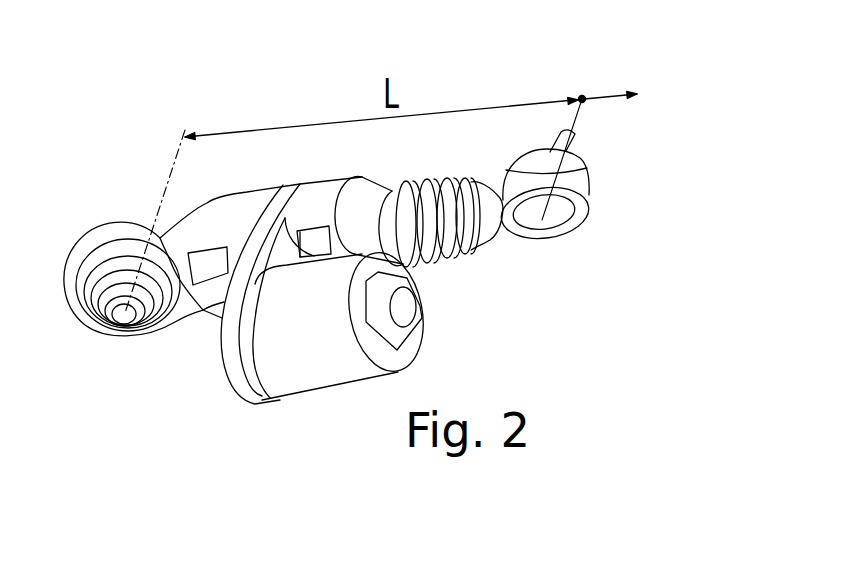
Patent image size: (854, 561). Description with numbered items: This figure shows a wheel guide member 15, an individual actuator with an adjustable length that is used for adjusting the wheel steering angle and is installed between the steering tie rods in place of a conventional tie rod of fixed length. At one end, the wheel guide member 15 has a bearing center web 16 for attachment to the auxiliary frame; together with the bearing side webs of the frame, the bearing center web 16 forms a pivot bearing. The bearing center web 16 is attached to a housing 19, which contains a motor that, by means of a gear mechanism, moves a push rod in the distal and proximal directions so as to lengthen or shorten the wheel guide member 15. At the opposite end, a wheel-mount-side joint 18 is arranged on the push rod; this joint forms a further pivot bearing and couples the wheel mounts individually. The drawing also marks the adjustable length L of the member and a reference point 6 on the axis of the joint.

The axis / joint center point 6 is at (597, 97).
The wheel guide member 15 is at (502, 323).
The bearing center web 16 is at (112, 233).
The wheel-mount-side joint 18 is at (597, 188).
The housing 19 is at (210, 330).